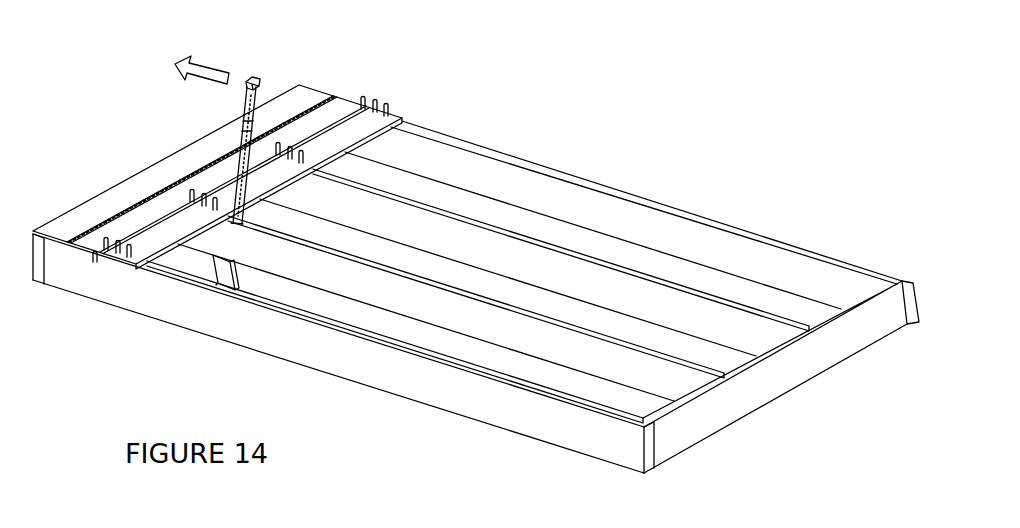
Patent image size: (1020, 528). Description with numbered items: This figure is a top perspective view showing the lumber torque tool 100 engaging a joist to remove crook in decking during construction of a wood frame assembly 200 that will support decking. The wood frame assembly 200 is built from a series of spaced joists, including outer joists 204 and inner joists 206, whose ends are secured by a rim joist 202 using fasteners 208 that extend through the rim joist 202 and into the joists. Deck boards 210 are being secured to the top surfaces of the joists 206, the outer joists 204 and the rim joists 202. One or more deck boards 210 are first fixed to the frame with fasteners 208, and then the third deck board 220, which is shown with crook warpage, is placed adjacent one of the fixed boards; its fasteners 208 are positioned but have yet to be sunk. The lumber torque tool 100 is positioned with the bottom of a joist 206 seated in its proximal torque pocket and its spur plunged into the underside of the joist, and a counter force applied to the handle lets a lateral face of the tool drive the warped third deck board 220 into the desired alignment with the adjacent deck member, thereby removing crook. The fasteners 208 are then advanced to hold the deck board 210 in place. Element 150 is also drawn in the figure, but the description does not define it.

The lumber torque tool 100 is at (293, 62).
The spacer plate 150 is at (214, 280).
The wood frame assembly 200 is at (476, 297).
The rim joist 202 is at (774, 408).
The outer joist 204 is at (745, 225).
The inner joist 206 is at (564, 243).
The fasteners 208 is at (124, 256).
The deck boards 210 is at (276, 201).
The third deck board 220 is at (399, 116).